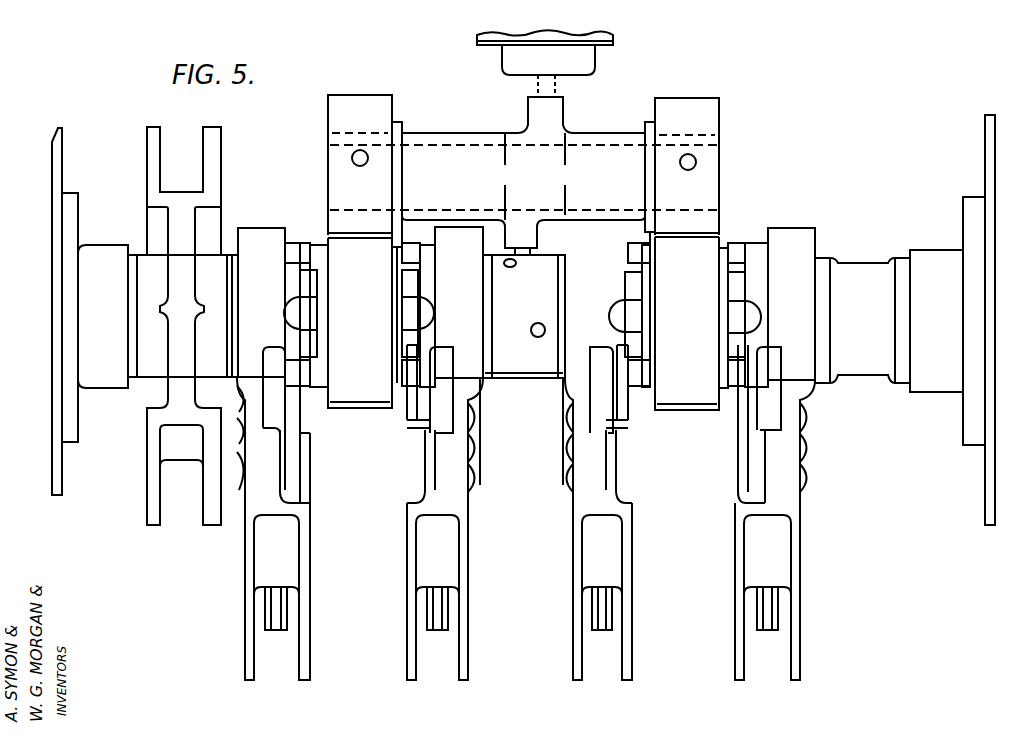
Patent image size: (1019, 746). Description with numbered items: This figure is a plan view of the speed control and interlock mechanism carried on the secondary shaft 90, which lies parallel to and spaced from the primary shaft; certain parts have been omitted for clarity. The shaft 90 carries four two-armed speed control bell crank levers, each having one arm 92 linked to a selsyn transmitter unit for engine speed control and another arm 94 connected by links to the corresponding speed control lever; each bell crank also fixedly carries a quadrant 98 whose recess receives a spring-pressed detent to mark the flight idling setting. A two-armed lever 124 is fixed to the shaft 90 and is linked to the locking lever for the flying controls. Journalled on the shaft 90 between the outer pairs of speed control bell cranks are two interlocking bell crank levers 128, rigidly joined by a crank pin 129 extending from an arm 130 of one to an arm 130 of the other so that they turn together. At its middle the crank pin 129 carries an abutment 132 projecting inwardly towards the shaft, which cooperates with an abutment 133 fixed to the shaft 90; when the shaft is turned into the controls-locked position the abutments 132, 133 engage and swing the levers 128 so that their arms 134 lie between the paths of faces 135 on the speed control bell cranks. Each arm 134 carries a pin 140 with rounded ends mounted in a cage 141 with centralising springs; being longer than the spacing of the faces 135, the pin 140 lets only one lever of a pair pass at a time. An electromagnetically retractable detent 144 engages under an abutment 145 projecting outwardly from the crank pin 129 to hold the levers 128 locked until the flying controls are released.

The secondary shaft 90 is at (855, 278).
The arm 92 is at (309, 458).
The other arm 94 is at (260, 503).
The quadrant 98 is at (281, 630).
The two-armed lever 124 is at (208, 235).
The interlocking bell crank lever 128 is at (312, 230).
The crank pin 129 is at (618, 143).
The arm 130 is at (380, 115).
The abutment 132 is at (523, 235).
The abutment 133 is at (522, 258).
The arm 134 is at (365, 400).
The face 135 is at (275, 395).
The pin 140 is at (435, 312).
The cage 141 is at (395, 307).
The electromagnetically retractable detent 144 is at (535, 90).
The abutment 145 is at (552, 116).